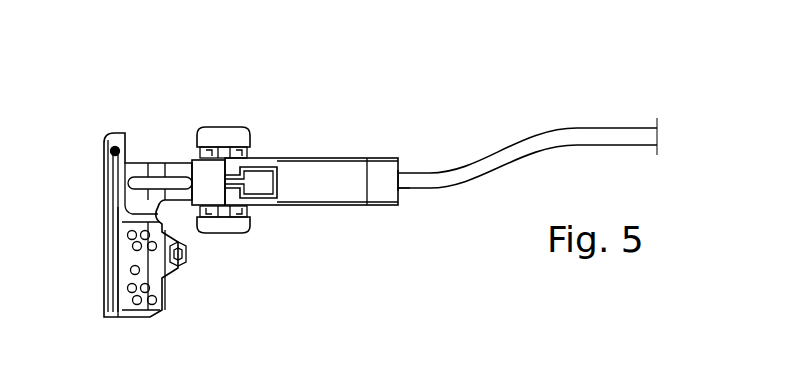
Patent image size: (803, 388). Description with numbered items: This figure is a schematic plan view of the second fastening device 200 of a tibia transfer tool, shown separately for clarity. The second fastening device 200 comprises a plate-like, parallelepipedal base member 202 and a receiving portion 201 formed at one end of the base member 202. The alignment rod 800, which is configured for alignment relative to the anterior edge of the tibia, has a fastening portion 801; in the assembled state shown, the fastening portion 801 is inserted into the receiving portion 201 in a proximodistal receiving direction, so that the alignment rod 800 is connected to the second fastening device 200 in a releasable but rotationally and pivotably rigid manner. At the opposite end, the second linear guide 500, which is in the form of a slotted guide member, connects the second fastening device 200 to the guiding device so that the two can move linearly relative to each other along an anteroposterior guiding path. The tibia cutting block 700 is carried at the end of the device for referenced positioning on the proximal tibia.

The second fastening device 200 is at (126, 102).
The receiving portion 201 is at (406, 163).
The base member 202 is at (322, 197).
The second linear guide 500 is at (210, 177).
The tibia cutting block 700 is at (103, 270).
The alignment rod 800 is at (612, 116).
The fastening portion 801 is at (406, 199).